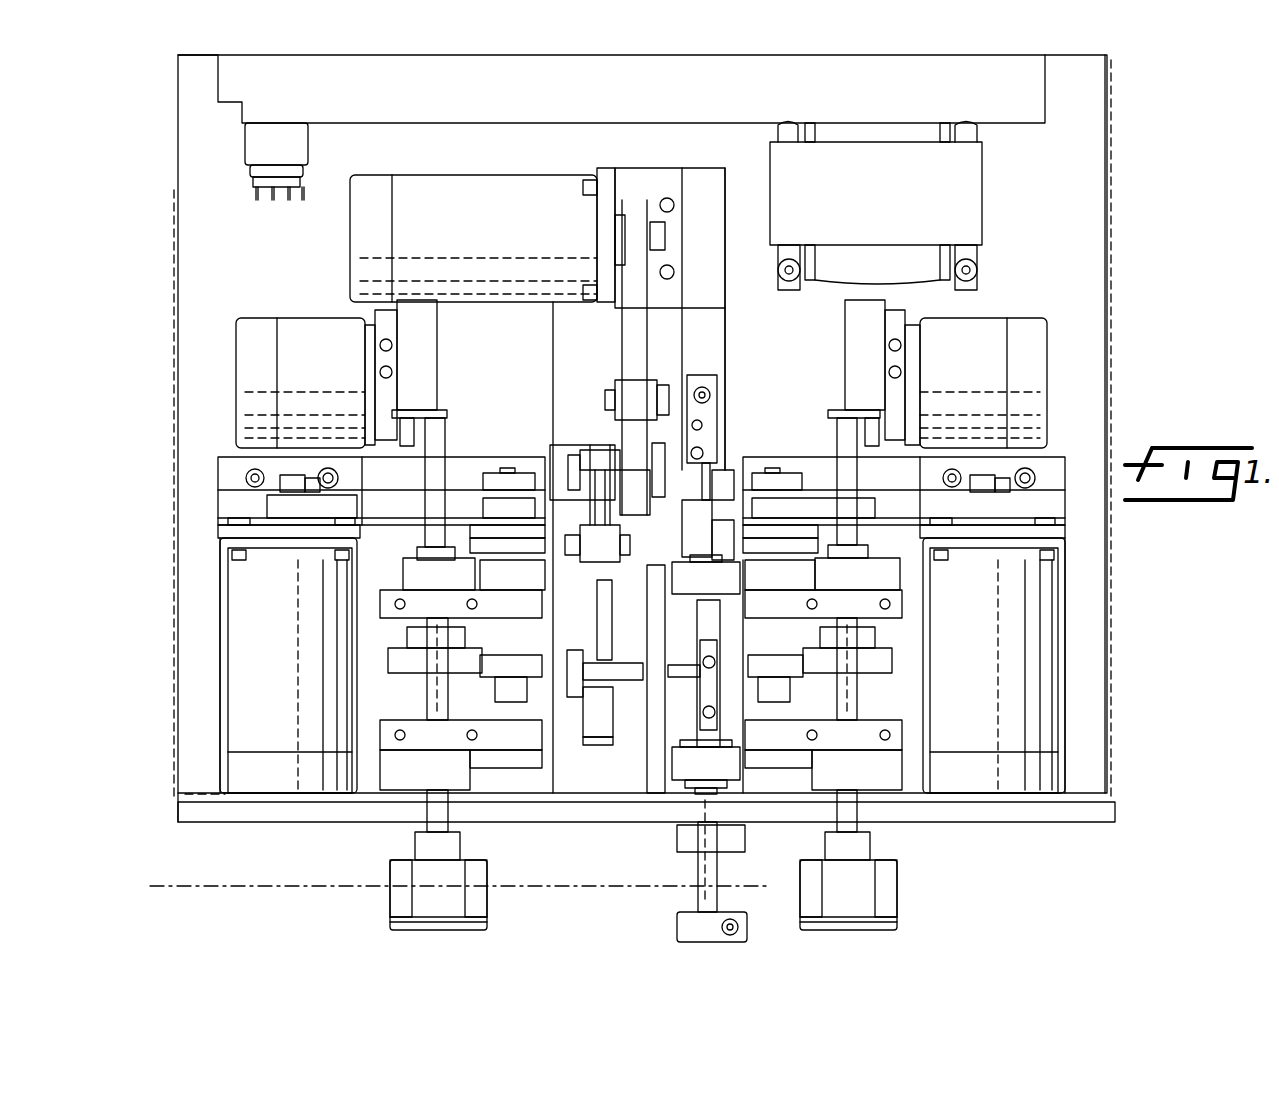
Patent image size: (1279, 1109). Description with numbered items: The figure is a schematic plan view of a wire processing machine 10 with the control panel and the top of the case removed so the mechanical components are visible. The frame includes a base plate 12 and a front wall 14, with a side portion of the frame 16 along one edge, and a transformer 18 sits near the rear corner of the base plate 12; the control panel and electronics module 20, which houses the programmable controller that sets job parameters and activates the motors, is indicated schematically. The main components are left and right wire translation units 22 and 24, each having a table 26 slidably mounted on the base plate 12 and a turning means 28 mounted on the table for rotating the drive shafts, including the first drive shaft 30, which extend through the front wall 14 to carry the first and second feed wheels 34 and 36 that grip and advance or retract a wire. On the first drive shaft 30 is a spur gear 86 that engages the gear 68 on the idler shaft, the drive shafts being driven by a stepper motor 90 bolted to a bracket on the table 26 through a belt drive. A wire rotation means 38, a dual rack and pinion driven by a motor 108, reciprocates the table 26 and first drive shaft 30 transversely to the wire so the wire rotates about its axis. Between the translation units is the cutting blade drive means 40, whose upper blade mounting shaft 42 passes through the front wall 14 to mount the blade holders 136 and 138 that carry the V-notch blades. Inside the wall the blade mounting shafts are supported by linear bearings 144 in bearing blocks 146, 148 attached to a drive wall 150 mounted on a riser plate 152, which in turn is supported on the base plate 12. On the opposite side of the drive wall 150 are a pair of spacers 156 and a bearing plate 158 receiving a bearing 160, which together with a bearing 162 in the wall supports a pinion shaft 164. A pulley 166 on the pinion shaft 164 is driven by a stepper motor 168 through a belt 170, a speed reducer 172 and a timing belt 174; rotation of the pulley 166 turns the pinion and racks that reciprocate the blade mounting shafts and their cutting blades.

The wire processing machine 10 is at (982, 838).
The base plate 12 is at (1098, 336).
The front wall 14 is at (1112, 818).
The side wall 16 is at (1107, 270).
The transformer 18 is at (982, 205).
The control panel and electronics module 20 is at (1045, 120).
The left wire translation unit 22 is at (215, 685).
The right wire translation unit 24 is at (1080, 668).
The table 26 is at (222, 625).
The turning means 28 is at (470, 474).
The first drive shaft 30 is at (427, 692).
The first feed wheel 34 is at (462, 868).
The second feed wheel 36 is at (487, 920).
The wire rotation means 38 is at (442, 355).
The cutting blade drive means 40 is at (728, 428).
The upper blade mounting shaft 42 is at (718, 877).
The gear 68 is at (492, 680).
The spur gear 86 is at (398, 650).
The stepper motor 90 is at (300, 796).
The motor 108 is at (300, 332).
The blade holder 136 is at (677, 925).
The blade holder 138 is at (677, 842).
The linear bearings 144 is at (720, 742).
The bearing block 146 is at (728, 795).
The bearing block 148 is at (742, 585).
The drive wall 150 is at (647, 782).
The riser plate 152 is at (700, 177).
The spacers 156 is at (640, 665).
The bearing plate 158 is at (581, 712).
The bearing 160 is at (572, 650).
The bearing 162 is at (706, 764).
The pinion shaft 164 is at (720, 665).
The pulley 166 is at (588, 612).
The stepper motor 168 is at (350, 248).
The belt 170 is at (640, 337).
The speed reducer 172 is at (605, 445).
The timing belt 174 is at (600, 742).